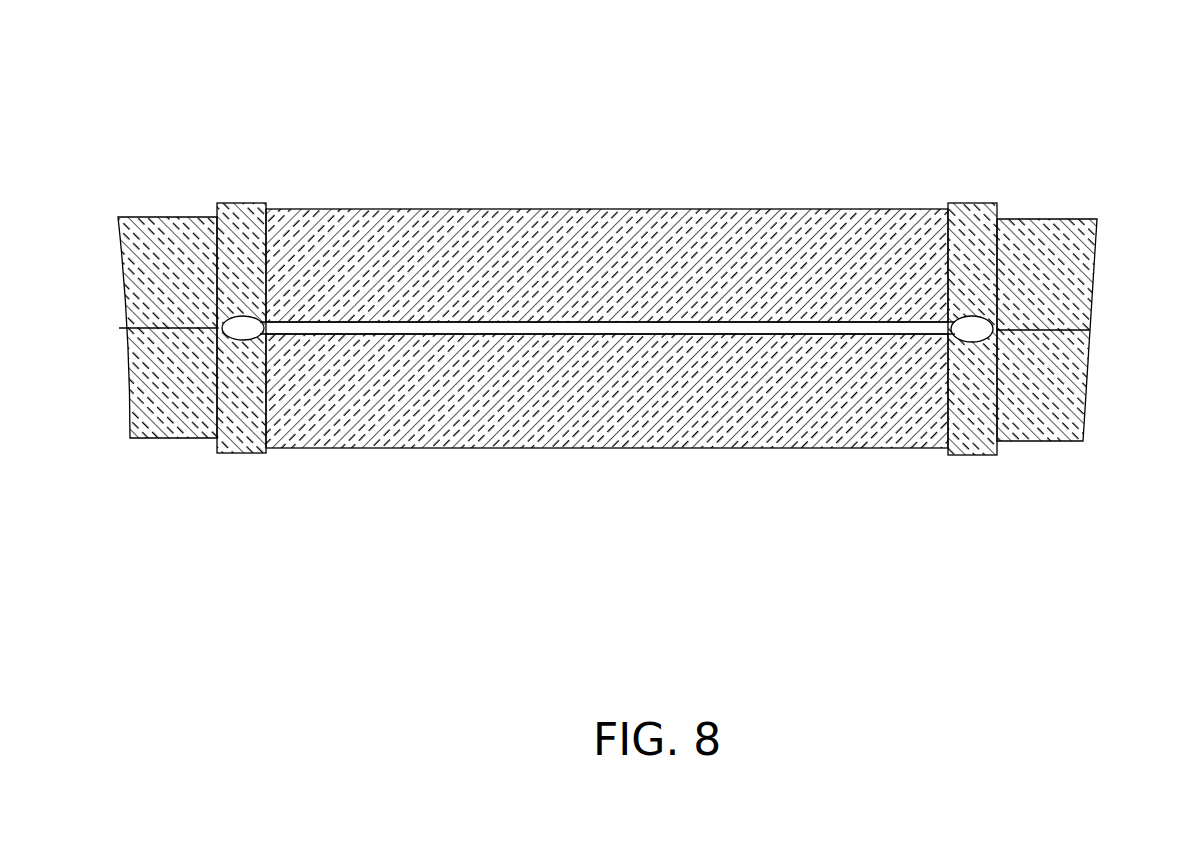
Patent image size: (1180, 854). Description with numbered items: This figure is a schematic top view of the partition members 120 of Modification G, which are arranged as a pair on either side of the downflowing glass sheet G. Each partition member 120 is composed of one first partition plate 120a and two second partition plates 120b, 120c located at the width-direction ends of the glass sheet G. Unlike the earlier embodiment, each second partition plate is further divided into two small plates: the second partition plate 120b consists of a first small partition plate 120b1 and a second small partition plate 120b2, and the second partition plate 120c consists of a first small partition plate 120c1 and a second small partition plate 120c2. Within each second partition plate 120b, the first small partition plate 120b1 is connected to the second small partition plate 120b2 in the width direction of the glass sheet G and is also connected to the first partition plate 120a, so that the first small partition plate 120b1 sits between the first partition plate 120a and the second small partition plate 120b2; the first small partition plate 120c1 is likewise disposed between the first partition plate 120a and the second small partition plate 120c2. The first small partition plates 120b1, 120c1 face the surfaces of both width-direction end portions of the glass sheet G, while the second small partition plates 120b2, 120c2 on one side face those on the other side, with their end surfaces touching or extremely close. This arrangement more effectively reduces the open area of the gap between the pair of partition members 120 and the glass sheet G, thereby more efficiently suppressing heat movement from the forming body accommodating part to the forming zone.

The partition member 120 is at (624, 327).
The first partition plate 120a is at (612, 228).
The second partition plate 120b is at (199, 330).
The first small partition plate 120b1 is at (247, 227).
The second small partition plate 120b2 is at (168, 240).
The second partition plate 120c is at (1008, 327).
The first small partition plate 120c1 is at (952, 328).
The second small partition plate 120c2 is at (1097, 219).
The glass sheet G is at (970, 331).